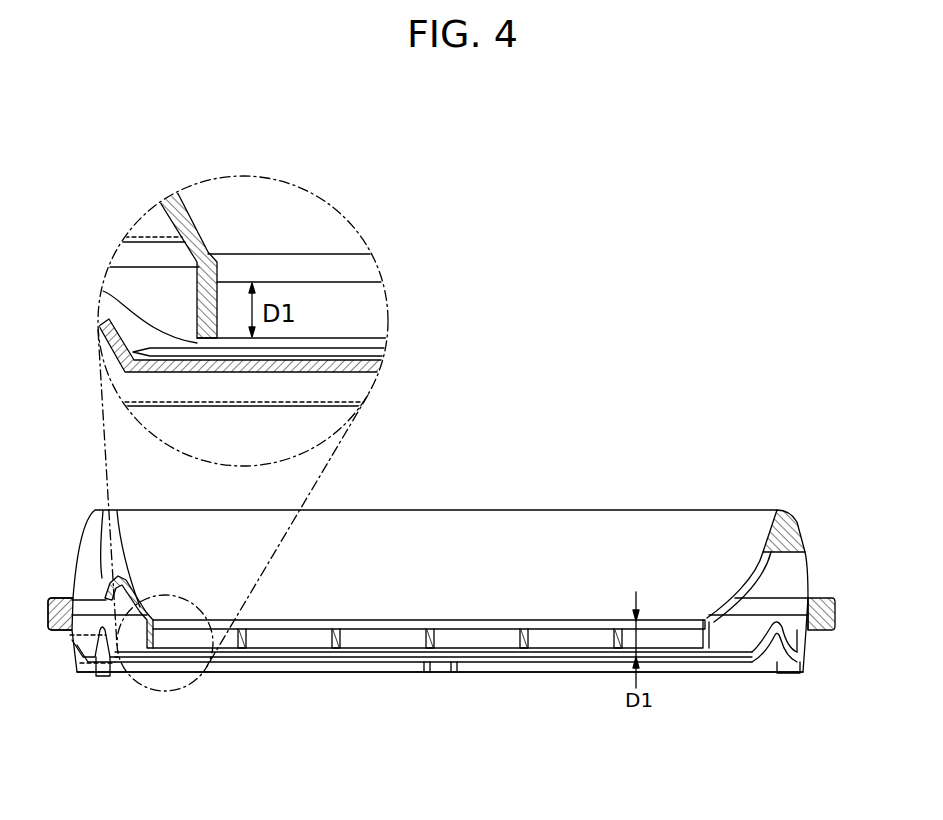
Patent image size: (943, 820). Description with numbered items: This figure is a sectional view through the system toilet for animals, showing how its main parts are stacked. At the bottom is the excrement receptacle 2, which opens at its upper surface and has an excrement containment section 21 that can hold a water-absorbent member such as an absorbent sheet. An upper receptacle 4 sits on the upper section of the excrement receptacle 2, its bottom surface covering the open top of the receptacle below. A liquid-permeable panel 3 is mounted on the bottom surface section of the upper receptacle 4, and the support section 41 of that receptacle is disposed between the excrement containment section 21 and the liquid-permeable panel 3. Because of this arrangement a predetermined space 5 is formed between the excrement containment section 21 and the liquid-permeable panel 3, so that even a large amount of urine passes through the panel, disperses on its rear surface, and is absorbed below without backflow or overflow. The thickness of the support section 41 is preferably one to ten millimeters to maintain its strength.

The excrement receptacle 2 is at (113, 674).
The liquid-permeable panel 3 is at (303, 263).
The upper receptacle 4 is at (624, 489).
The space 5 is at (104, 291).
The excrement containment section 21 is at (330, 360).
The support section 41 is at (617, 637).